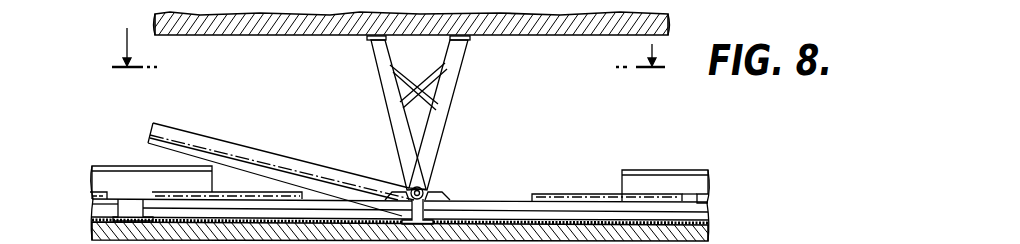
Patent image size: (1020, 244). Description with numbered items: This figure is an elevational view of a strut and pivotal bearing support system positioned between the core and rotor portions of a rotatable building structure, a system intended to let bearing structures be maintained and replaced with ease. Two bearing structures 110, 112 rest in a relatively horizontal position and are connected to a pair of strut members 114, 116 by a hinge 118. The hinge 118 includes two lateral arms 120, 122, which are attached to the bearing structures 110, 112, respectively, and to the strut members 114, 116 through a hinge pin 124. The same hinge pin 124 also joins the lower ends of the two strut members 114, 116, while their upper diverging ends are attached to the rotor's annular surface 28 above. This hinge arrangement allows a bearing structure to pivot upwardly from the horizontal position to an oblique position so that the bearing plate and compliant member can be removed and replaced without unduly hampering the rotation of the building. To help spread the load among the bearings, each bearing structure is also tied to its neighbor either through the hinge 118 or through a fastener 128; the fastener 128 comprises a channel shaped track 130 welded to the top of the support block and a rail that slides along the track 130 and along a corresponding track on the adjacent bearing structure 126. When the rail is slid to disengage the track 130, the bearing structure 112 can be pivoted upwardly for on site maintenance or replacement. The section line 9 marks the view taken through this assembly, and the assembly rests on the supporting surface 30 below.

The section line 9- 9 is at (385, 47).
The annular surface 28 is at (325, 37).
The floor 30 is at (700, 222).
The bearing structure 110 is at (517, 201).
The bearing structure 112 is at (244, 153).
The strut member 114 is at (385, 89).
The strut member 116 is at (447, 88).
The hinge 118 is at (427, 181).
The lateral arm 120 is at (432, 194).
The lateral arm 122 is at (398, 193).
The hinge pin 124 is at (430, 189).
The bearing structure 126 is at (100, 208).
The fastener 128 is at (281, 149).
The channel shaped track 130 is at (118, 176).